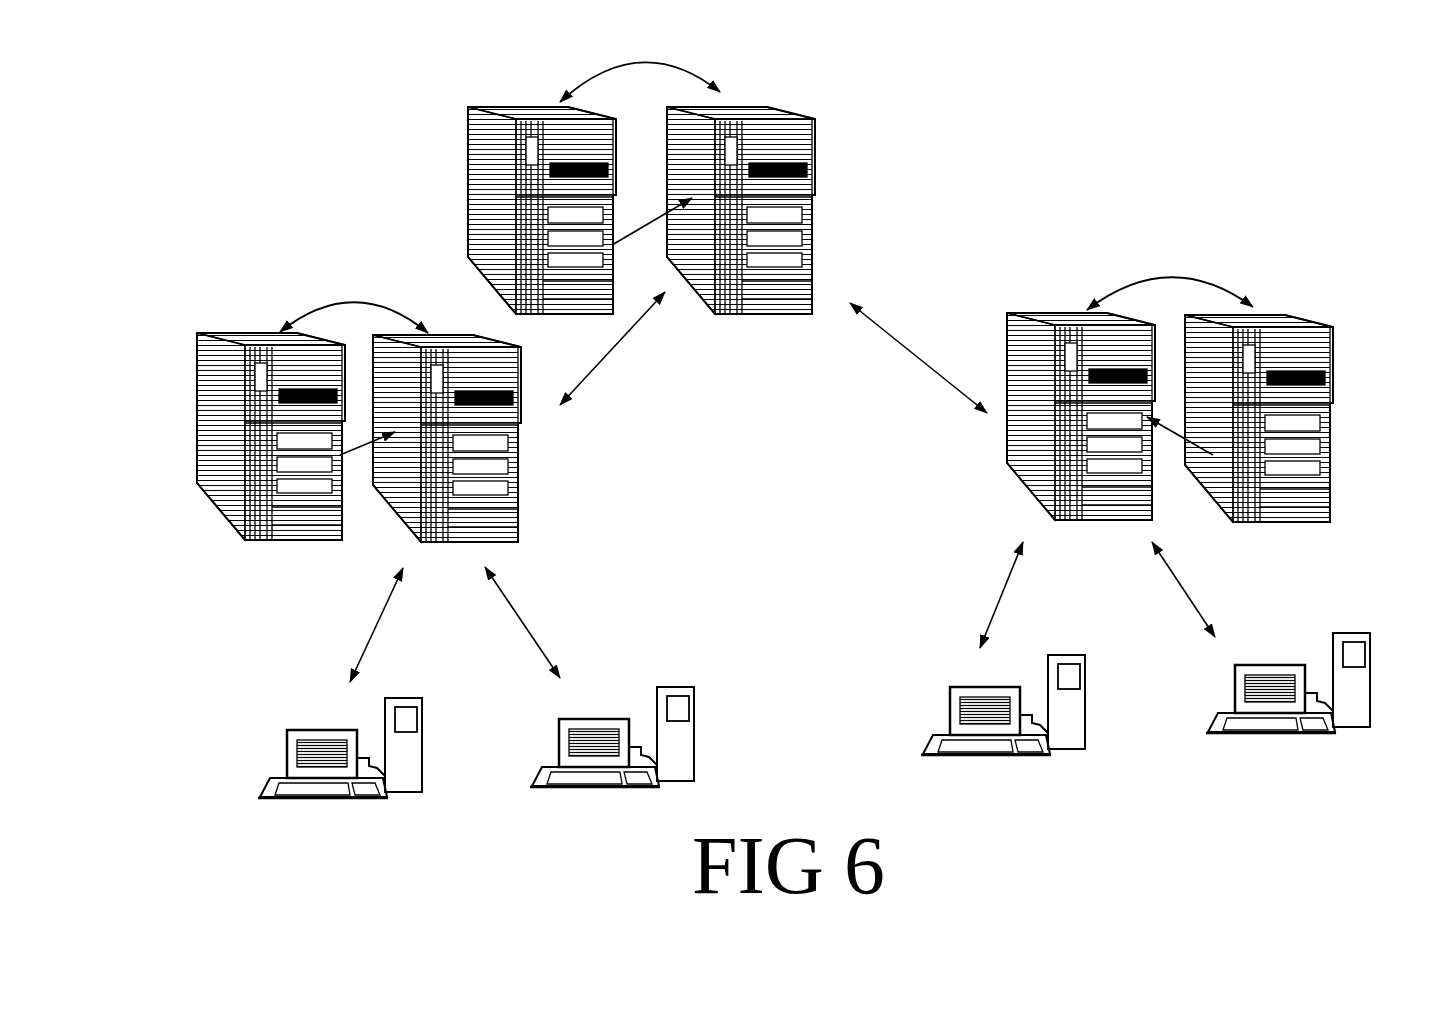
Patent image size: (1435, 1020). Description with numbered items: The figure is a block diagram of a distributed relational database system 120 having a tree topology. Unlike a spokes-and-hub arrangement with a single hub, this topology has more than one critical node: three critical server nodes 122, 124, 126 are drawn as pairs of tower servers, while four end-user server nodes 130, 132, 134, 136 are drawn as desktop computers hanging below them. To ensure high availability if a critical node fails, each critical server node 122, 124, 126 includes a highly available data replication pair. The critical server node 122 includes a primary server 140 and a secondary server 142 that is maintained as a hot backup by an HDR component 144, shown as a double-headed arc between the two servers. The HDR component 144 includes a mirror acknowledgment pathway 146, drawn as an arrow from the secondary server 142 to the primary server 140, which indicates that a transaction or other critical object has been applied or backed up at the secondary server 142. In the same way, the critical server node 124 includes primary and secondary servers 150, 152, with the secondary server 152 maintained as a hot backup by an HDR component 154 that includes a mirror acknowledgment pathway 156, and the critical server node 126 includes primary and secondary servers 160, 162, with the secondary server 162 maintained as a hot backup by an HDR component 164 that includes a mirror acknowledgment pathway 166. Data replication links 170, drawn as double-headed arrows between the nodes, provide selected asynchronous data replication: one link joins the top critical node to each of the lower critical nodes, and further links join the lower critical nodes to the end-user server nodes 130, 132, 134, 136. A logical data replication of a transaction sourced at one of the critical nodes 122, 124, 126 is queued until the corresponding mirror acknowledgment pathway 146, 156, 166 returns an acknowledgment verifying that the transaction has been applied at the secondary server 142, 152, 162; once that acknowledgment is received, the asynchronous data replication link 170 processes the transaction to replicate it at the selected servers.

The distributed database system 120 is at (1052, 136).
The critical server node 122 is at (571, 57).
The critical server node 124 is at (339, 271).
The critical server node 126 is at (1141, 246).
The end-user server node 130 is at (320, 798).
The end-user server node 132 is at (592, 788).
The end-user server node 134 is at (1005, 768).
The end-user server node 136 is at (1275, 732).
The primary server 140 is at (767, 110).
The secondary server 142 is at (468, 150).
The HDR component 144 is at (645, 56).
The mirror acknowledgment pathway 146 is at (622, 238).
The primary server 150 is at (520, 470).
The secondary server 152 is at (205, 410).
The HDR component 154 is at (350, 294).
The mirror acknowledgment pathway 156 is at (353, 450).
The primary server 160 is at (1007, 343).
The secondary server 162 is at (1333, 455).
The HDR component 164 is at (1193, 268).
The mirror acknowledgment pathway 166 is at (1180, 437).
The data replication links 170 is at (628, 340).